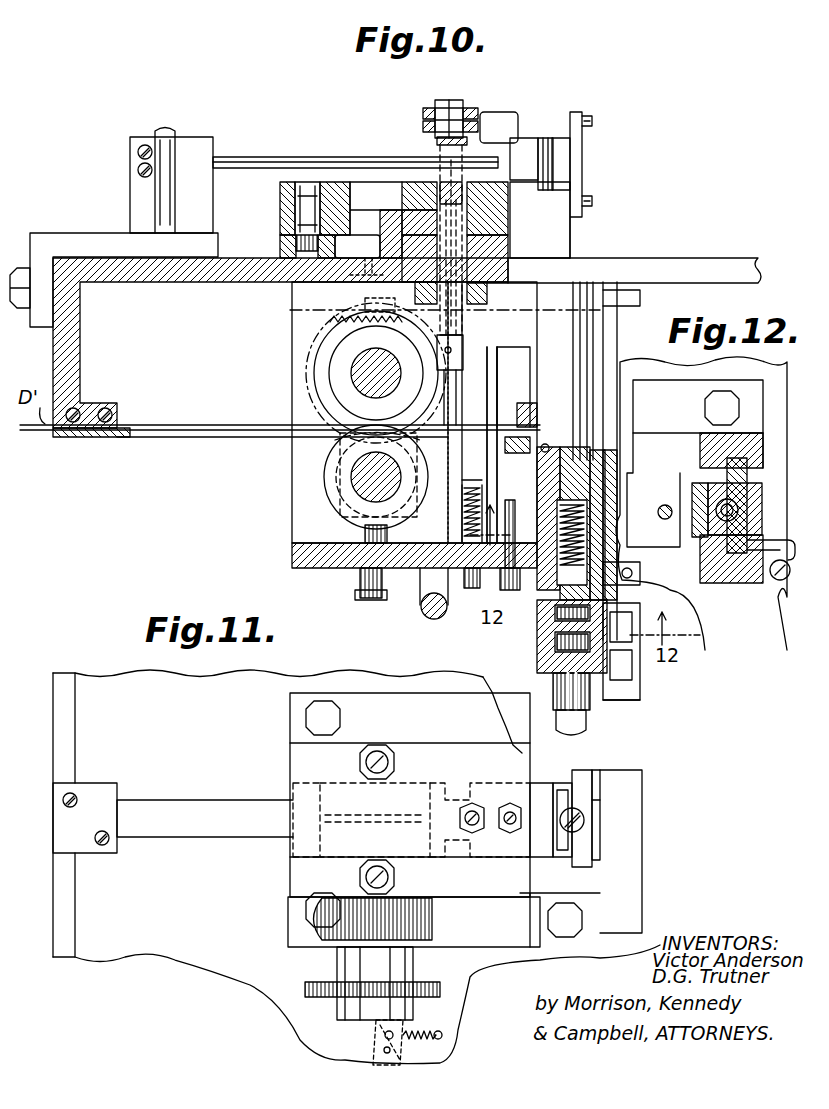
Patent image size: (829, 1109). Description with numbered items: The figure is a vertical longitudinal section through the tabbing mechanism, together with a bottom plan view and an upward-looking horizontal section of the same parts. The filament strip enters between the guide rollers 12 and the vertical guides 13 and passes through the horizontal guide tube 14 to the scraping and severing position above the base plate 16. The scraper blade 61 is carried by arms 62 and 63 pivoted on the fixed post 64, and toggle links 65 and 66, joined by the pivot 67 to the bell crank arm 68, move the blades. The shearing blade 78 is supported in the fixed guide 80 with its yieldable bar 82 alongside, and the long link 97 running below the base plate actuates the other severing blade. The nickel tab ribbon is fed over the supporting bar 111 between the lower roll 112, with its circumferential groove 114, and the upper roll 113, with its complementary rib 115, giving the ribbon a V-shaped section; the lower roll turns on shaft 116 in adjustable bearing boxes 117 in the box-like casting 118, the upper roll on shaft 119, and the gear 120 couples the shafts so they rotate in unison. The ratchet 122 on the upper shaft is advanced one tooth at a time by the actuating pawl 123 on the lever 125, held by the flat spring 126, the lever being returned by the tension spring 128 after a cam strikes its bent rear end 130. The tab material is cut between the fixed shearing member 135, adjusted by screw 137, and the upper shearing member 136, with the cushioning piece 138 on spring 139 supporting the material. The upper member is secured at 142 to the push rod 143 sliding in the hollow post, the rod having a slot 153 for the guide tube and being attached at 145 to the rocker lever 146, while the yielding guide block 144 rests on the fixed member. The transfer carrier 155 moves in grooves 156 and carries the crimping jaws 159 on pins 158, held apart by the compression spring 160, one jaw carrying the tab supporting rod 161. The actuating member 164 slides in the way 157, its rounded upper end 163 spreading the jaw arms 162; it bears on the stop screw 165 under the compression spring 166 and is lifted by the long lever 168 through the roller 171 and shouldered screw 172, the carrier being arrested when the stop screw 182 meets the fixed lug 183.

In FIG. 10, the guide rollers 12 is at (137, 170).
In FIG. 10, the vertically disposed guides 13 is at (165, 188).
In FIG. 10, the horizontal guide tube 14 is at (240, 157).
In FIG. 10, the base plate 16 is at (718, 260).
In FIG. 11, the base plate 16 is at (356, 867).
In FIG. 12, the base plate 16 is at (701, 505).
In FIG. 10, the scraper blade 61 is at (525, 138).
In FIG. 10, the scraper arm 62 is at (404, 220).
In FIG. 10, the scraper arm 63 is at (404, 194).
In FIG. 10, the fixed post 64 is at (500, 247).
In FIG. 10, the toggle link 65 is at (296, 196).
In FIG. 10, the toggle link 66 is at (296, 214).
In FIG. 10, the pivot 67 is at (292, 226).
In FIG. 10, the bell crank arm 68 is at (284, 244).
In FIG. 10, the shearing blade 78 is at (545, 138).
In FIG. 10, the fixed guide 80 is at (499, 127).
In FIG. 10, the yieldable bar 82 is at (560, 145).
In FIG. 10, the long link 97 is at (421, 607).
In FIG. 10, the supporting and guiding bar 111 is at (180, 442).
In FIG. 11, the supporting and guiding bar 111 is at (173, 818).
In FIG. 10, the lower feed roll 112 is at (328, 494).
In FIG. 11, the lower feed roll 112 is at (300, 793).
In FIG. 10, the upper feed roll 113 is at (348, 335).
In FIG. 10, the circumferential groove 114 is at (335, 445).
In FIG. 11, the circumferential groove 114 is at (333, 820).
In FIG. 10, the circumferential rib 115 is at (331, 388).
In FIG. 10, the lower roll shaft 116 is at (355, 473).
In FIG. 10, the adjustable bearing boxes 117 is at (340, 533).
In FIG. 10, the box-like casting 118 is at (293, 370).
In FIG. 11, the box-like casting 118 is at (414, 820).
In FIG. 12, the box-like casting 118 is at (695, 463).
In FIG. 10, the upper roll shaft 119 is at (356, 360).
In FIG. 11, the gear 120 is at (432, 905).
In FIG. 11, the ratchet 122 is at (413, 975).
In FIG. 10, the actuating pawl 123 is at (366, 300).
In FIG. 11, the actuating pawl 123 is at (380, 1015).
In FIG. 11, the lever 125 is at (380, 1052).
In FIG. 11, the flat spring 126 is at (398, 1050).
In FIG. 11, the tension spring 128 is at (410, 1025).
In FIG. 10, the rear end of lever 130 is at (360, 255).
In FIG. 10, the lower shearing member 135 is at (497, 440).
In FIG. 11, the lower shearing member 135 is at (508, 843).
In FIG. 10, the upper shearing member 136 is at (472, 392).
In FIG. 10, the adjusting screw 137 is at (505, 590).
In FIG. 11, the adjusting screw 137 is at (510, 808).
In FIG. 10, the cushioning piece 138 is at (462, 437).
In FIG. 11, the cushioning piece 138 is at (472, 840).
In FIG. 10, the spring 139 is at (462, 529).
In FIG. 10, the securing point 142 is at (452, 350).
In FIG. 10, the push rod 143 is at (450, 100).
In FIG. 10, the yielding guide block 144 is at (516, 385).
In FIG. 10, the pivotal attachment 145 is at (423, 123).
In FIG. 10, the rocker lever 146 is at (425, 108).
In FIG. 10, the slot 153 is at (437, 141).
In FIG. 10, the transfer carrier 155 is at (590, 420).
In FIG. 11, the transfer carrier 155 is at (590, 785).
In FIG. 12, the transfer carrier 155 is at (748, 472).
In FIG. 11, the grooves 156 is at (575, 770).
In FIG. 12, the grooves 156 is at (765, 450).
In FIG. 10, the vertical way 157 is at (553, 685).
In FIG. 10, the pins 158 is at (570, 371).
In FIG. 10, the crimping jaws 159 is at (537, 405).
In FIG. 10, the compression spring 160 is at (538, 470).
In FIG. 10, the tab supporting rod 161 is at (518, 451).
In FIG. 10, the jaw arms 162 is at (498, 478).
In FIG. 11, the jaw arms 162 is at (552, 783).
In FIG. 10, the rounded upper end 163 is at (564, 523).
In FIG. 10, the actuating member 164 is at (545, 660).
In FIG. 11, the actuating member 164 is at (600, 800).
In FIG. 12, the actuating member 164 is at (763, 497).
In FIG. 10, the stop screw 165 is at (584, 735).
In FIG. 11, the stop screw 165 is at (588, 822).
In FIG. 10, the compression spring 166 is at (545, 637).
In FIG. 12, the compression spring 166 is at (739, 512).
In FIG. 10, the long lever 168 is at (633, 700).
In FIG. 11, the long lever 168 is at (581, 858).
In FIG. 10, the roller 171 is at (632, 670).
In FIG. 10, the shouldered screw 172 is at (632, 640).
In FIG. 10, the stop screw 182 is at (641, 573).
In FIG. 12, the stop screw 182 is at (782, 558).
In FIG. 10, the fixed lug 183 is at (641, 298).